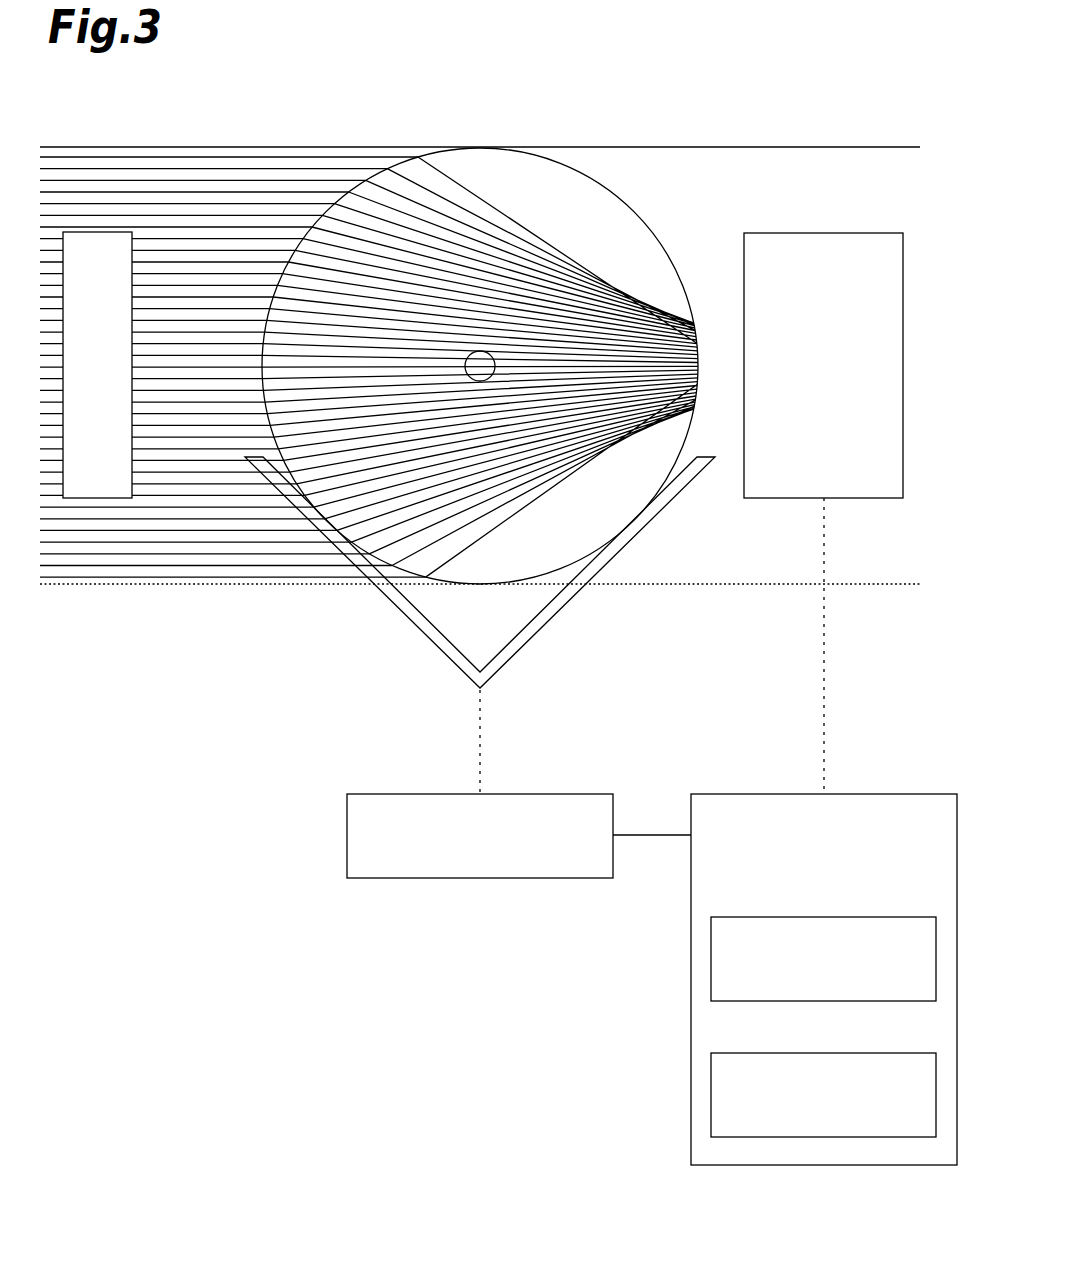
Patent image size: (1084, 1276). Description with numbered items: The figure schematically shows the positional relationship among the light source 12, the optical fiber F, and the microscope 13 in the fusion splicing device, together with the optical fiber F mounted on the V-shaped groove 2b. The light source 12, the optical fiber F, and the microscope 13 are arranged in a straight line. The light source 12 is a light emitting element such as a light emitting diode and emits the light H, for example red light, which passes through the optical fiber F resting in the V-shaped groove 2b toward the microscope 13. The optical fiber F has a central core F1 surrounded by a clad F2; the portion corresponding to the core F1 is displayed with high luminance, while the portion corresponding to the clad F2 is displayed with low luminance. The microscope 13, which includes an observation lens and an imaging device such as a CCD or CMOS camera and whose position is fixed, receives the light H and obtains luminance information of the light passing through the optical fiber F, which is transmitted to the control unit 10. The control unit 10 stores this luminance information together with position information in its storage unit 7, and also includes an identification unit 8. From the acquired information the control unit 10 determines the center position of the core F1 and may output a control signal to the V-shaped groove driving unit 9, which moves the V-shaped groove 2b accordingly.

The light source 12 is at (98, 248).
The light H is at (203, 287).
The clad F2 is at (541, 183).
The optical fiber F is at (582, 205).
The core F1 is at (481, 370).
The V-shaped groove 2b is at (420, 607).
The microscope 13 is at (822, 250).
The V-shaped groove driving unit 9 is at (478, 878).
The control unit 10 is at (824, 1009).
The storage unit 7 is at (887, 917).
The identification unit 8 is at (887, 1053).